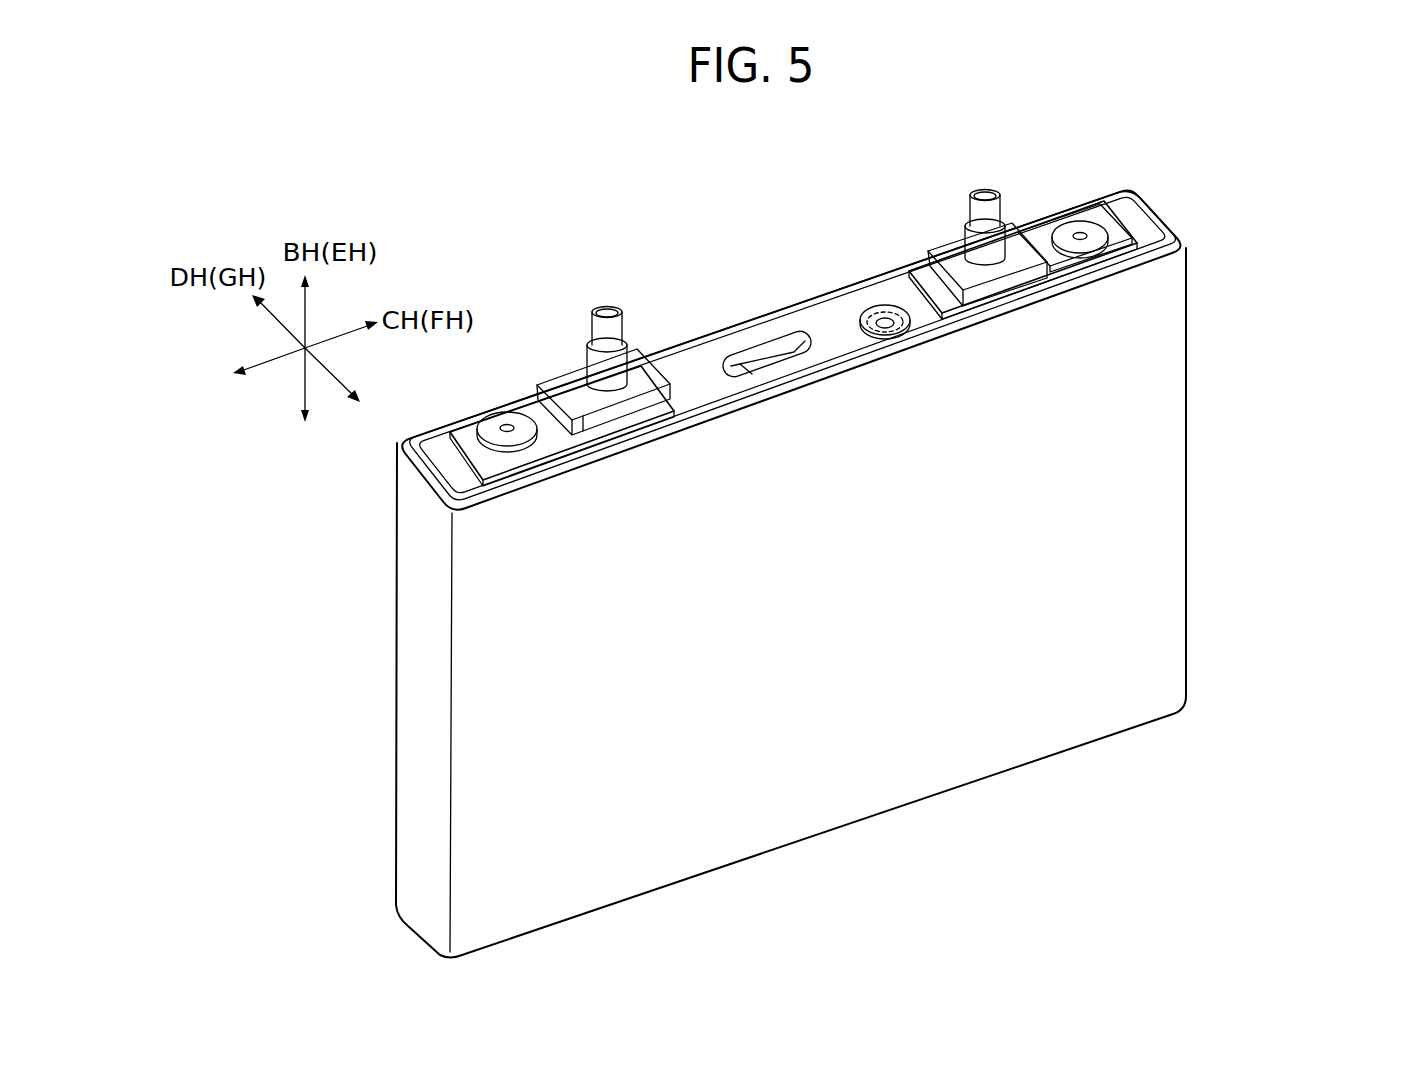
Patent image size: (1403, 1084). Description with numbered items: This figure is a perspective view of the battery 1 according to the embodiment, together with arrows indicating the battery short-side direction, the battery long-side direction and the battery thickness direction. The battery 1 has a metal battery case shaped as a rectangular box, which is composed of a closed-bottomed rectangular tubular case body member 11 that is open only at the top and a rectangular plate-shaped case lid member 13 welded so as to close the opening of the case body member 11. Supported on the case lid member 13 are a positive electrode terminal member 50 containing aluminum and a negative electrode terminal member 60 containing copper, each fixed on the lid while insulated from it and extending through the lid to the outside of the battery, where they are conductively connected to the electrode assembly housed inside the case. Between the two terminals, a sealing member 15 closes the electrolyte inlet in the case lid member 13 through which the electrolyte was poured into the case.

The battery 1 is at (508, 222).
The case body member 11 is at (1155, 540).
The case lid member 13 is at (694, 390).
The sealing member 15 is at (876, 308).
The positive electrode terminal member 50 is at (560, 365).
The negative electrode terminal member 60 is at (1018, 219).